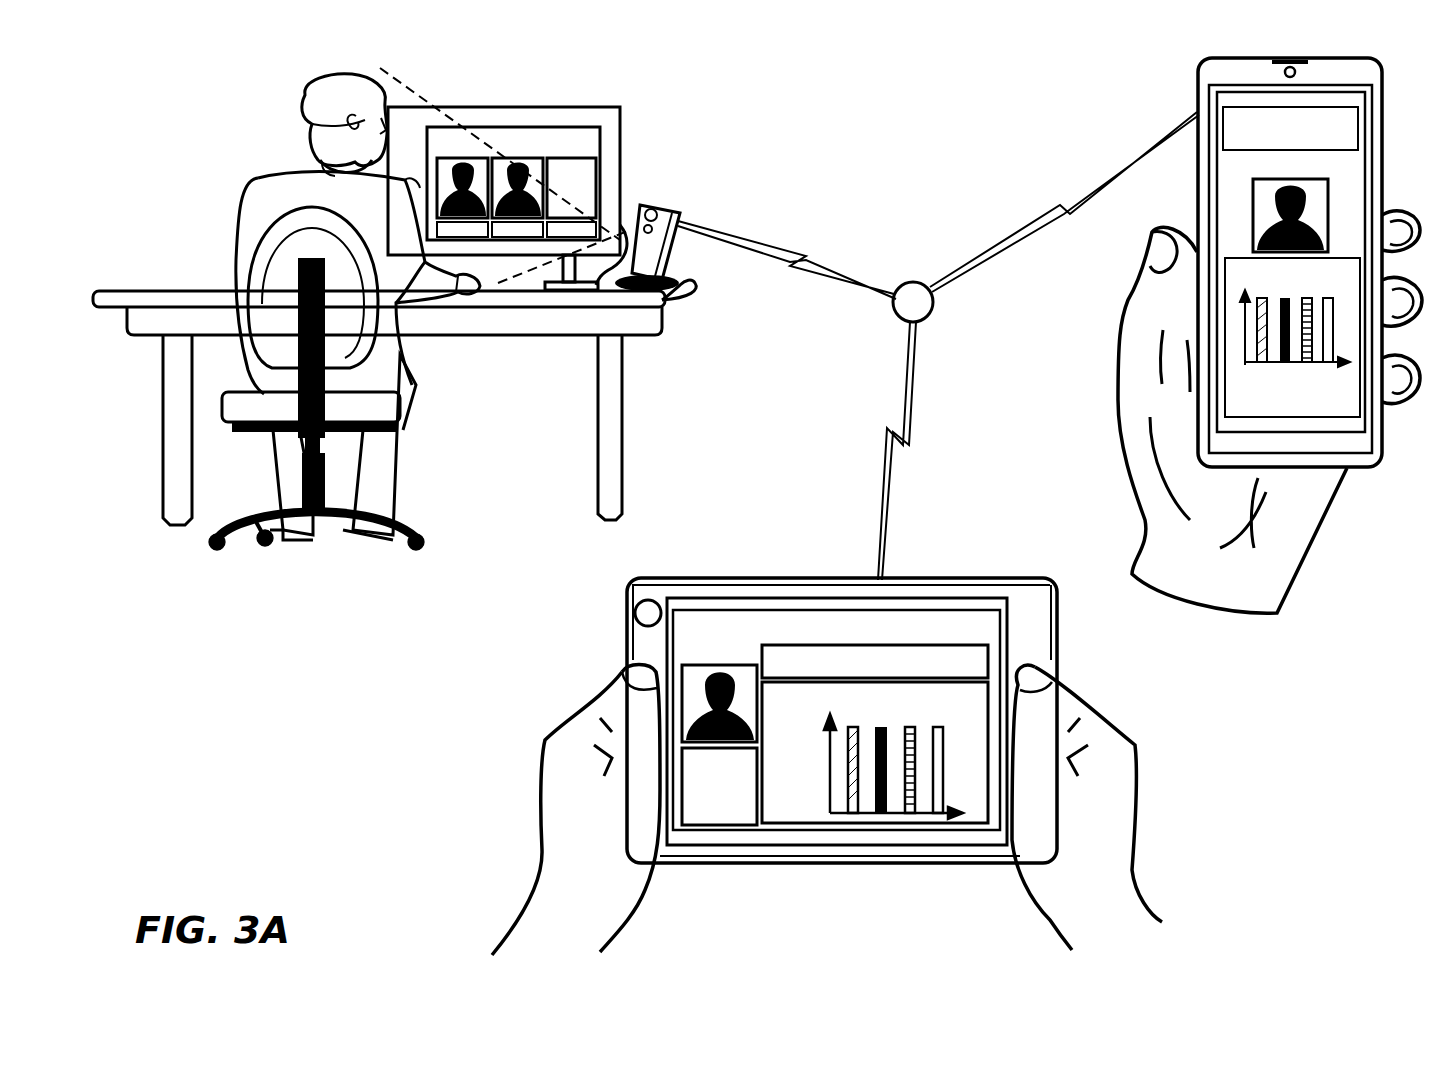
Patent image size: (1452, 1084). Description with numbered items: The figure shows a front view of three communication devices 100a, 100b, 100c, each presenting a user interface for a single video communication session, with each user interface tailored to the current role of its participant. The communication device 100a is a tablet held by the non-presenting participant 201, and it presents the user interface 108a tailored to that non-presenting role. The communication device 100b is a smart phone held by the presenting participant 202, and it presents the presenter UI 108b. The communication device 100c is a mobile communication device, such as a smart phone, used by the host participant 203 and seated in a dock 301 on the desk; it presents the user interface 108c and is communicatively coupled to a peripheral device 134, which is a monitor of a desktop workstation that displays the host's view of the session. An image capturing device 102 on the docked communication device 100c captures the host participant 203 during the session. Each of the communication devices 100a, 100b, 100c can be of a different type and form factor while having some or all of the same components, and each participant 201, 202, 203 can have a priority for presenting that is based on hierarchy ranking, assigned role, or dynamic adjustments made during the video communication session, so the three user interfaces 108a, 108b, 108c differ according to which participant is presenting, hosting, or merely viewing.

The communication device 100a is at (625, 610).
The communication device 100b is at (1197, 65).
The communication device 100c is at (690, 212).
The image capturing device 102 is at (648, 203).
The user interface 108a is at (837, 721).
The presenter UI 108b is at (1358, 192).
The user interface 108c is at (513, 183).
The peripheral device 134 is at (545, 107).
The non-presenting participant 201 is at (560, 738).
The presenting participant 202 is at (1118, 442).
The host participant 203 is at (275, 175).
The dock 301 is at (680, 292).